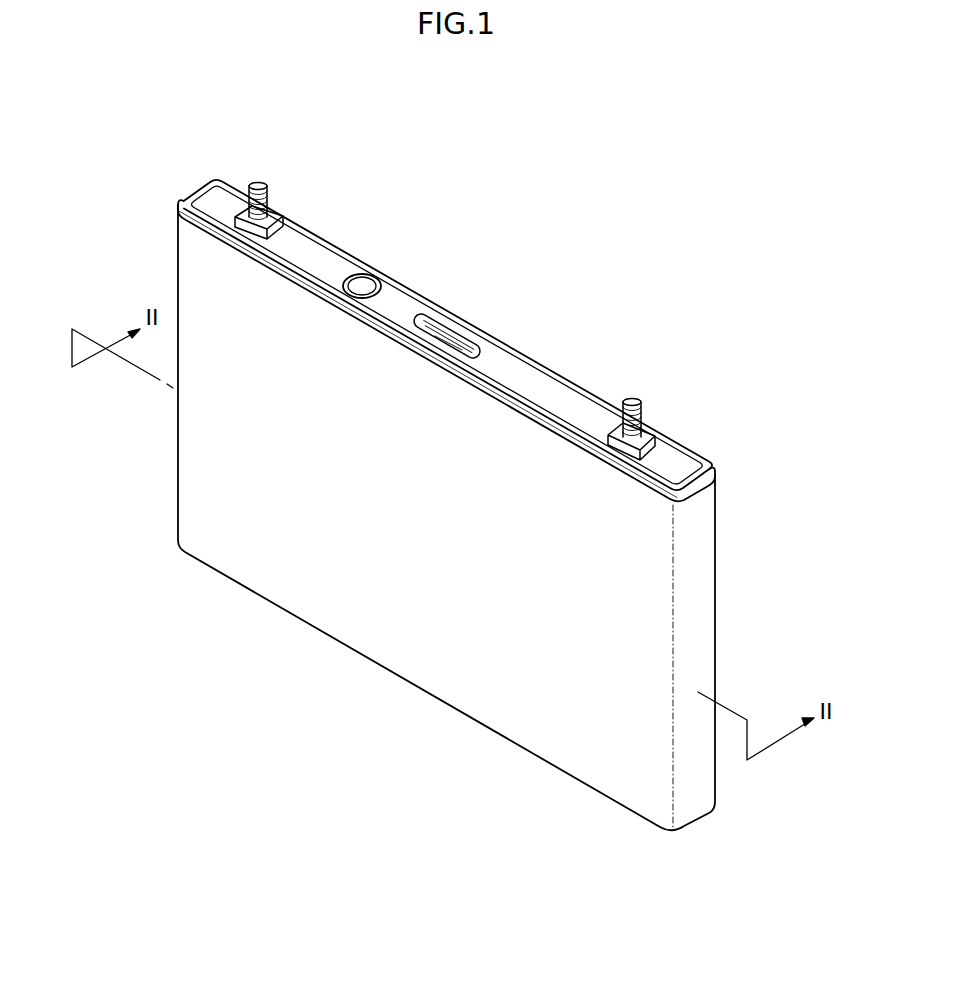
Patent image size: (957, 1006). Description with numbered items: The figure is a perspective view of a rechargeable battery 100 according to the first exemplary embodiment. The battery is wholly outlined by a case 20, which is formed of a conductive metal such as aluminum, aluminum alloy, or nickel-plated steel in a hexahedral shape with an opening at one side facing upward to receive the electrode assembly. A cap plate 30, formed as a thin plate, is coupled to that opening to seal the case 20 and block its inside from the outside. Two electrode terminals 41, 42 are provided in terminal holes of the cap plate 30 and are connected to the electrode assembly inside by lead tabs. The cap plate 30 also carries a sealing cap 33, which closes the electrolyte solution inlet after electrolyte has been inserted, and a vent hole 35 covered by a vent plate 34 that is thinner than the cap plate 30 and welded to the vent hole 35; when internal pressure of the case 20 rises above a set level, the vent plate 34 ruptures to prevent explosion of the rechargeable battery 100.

The rechargeable battery 100 is at (565, 247).
The case 20 is at (430, 672).
The cap plate 30 is at (545, 385).
The sealing cap 33 is at (362, 280).
The vent plate 34 is at (447, 333).
The vent hole 35 is at (462, 340).
The electrode terminal 41 is at (268, 172).
The electrode terminal 42 is at (641, 398).